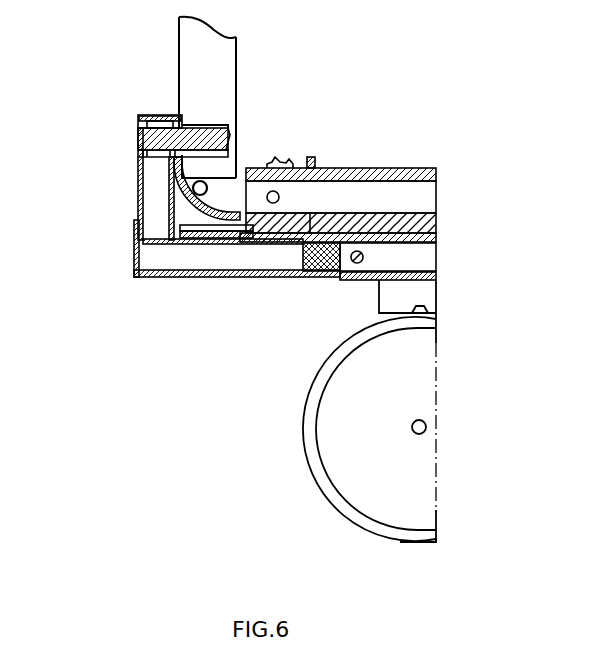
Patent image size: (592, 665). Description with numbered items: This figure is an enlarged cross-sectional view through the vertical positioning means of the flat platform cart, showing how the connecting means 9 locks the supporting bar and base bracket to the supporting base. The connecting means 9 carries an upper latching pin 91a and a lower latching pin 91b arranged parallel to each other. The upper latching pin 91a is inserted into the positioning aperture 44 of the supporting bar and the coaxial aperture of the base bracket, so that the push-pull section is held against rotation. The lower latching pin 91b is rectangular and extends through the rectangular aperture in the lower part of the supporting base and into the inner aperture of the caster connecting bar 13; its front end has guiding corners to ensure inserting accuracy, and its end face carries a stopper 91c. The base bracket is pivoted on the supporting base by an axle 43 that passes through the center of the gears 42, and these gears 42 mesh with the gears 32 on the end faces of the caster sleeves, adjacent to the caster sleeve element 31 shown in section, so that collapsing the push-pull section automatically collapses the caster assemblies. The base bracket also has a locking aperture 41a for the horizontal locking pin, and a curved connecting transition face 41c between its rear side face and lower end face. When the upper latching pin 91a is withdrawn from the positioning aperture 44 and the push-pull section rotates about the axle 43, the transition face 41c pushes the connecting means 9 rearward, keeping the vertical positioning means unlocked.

The connecting means 9 is at (140, 166).
The caster connecting bar 13 is at (383, 270).
The outer tube 31 is at (375, 168).
The gears on caster sleeves 32 is at (322, 168).
The locking aperture 41a is at (172, 212).
The curved connecting transition face 41c is at (175, 187).
The gears 42 is at (290, 163).
The axle 43 is at (235, 220).
The positioning aperture 44 is at (233, 128).
The upper latching pin 91a is at (138, 131).
The lower latching pin 91b is at (243, 262).
The stopper 91c is at (322, 268).